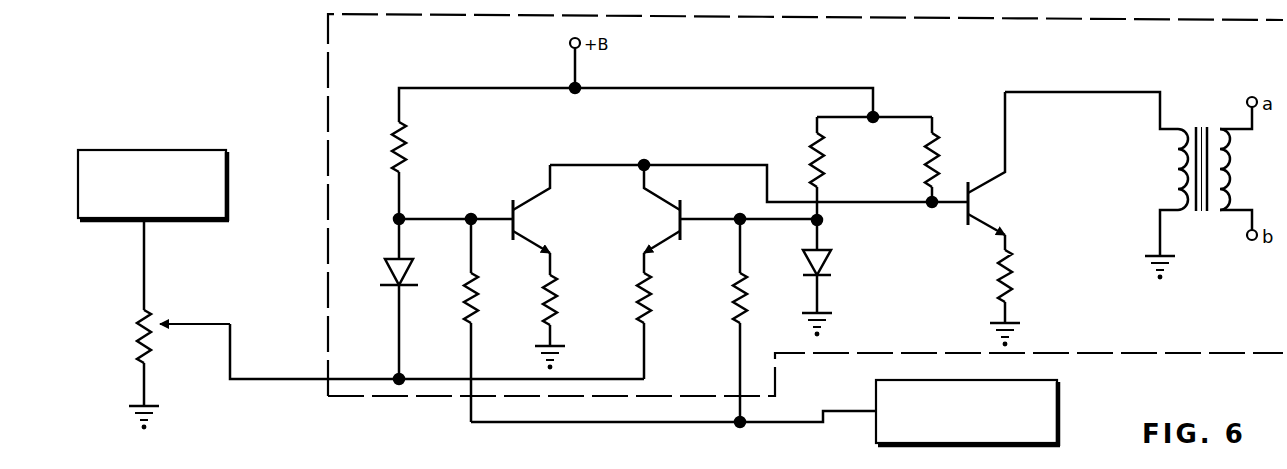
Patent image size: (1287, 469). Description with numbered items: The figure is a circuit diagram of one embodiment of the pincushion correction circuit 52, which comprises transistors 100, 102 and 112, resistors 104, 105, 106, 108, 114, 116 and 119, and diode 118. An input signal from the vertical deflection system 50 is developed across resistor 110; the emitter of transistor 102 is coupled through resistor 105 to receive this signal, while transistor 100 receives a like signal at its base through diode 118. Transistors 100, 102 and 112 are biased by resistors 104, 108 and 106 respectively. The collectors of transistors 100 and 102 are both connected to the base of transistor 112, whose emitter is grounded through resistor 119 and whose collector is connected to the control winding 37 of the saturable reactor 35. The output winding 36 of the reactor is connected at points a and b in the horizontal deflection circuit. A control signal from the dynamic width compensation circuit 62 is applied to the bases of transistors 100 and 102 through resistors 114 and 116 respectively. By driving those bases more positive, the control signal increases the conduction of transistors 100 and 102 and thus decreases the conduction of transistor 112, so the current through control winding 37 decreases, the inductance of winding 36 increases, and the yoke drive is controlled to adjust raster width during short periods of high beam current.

The vertical deflection system 50 is at (179, 148).
The resistor 110 is at (137, 323).
The resistor 104 is at (406, 128).
The diode 118 is at (386, 281).
The resistor 114 is at (464, 300).
The transistor 100 is at (520, 216).
The transistor 102 is at (685, 214).
The resistor 105 is at (638, 297).
The resistor 116 is at (733, 297).
The resistor 108 is at (810, 150).
The resistor 106 is at (940, 140).
The transistor 112 is at (978, 199).
The resistor 119 is at (998, 281).
The saturable reactor 35 is at (1202, 123).
The control winding 37 is at (1177, 161).
The output winding 36 is at (1223, 183).
The pincushion correction circuit 52 is at (1251, 342).
The dynamic width compensation circuit 62 is at (1064, 402).